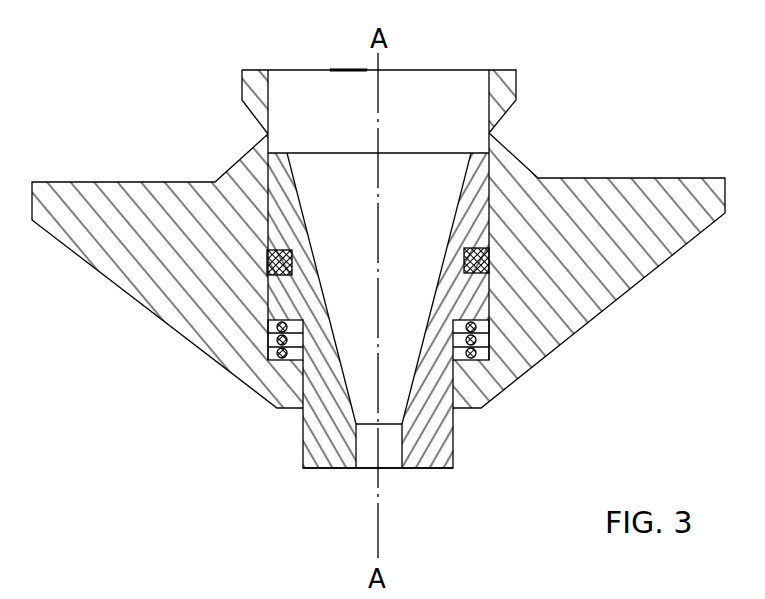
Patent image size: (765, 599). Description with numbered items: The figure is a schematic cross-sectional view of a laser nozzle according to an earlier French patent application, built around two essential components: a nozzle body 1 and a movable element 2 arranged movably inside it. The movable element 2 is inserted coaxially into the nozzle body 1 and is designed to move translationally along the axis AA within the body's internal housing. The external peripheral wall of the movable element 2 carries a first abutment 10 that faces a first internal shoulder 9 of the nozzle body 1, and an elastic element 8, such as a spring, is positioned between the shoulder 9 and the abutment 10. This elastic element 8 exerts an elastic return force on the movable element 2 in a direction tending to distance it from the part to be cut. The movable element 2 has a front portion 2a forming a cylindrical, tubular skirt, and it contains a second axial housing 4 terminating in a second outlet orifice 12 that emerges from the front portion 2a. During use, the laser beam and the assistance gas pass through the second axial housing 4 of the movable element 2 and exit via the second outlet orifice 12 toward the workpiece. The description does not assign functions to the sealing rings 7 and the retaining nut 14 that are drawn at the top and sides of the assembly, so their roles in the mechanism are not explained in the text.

The nozzle body 1 is at (582, 293).
The movable element 2 is at (335, 397).
The front portion 2a is at (308, 472).
The second axial housing 4 is at (412, 238).
The sealing ring 7 is at (303, 244).
The elastic element 8 is at (285, 343).
The first internal shoulder 9 is at (473, 362).
The first abutment 10 is at (465, 305).
The second outlet orifice 12 is at (389, 466).
The retaining nut 14 is at (372, 153).